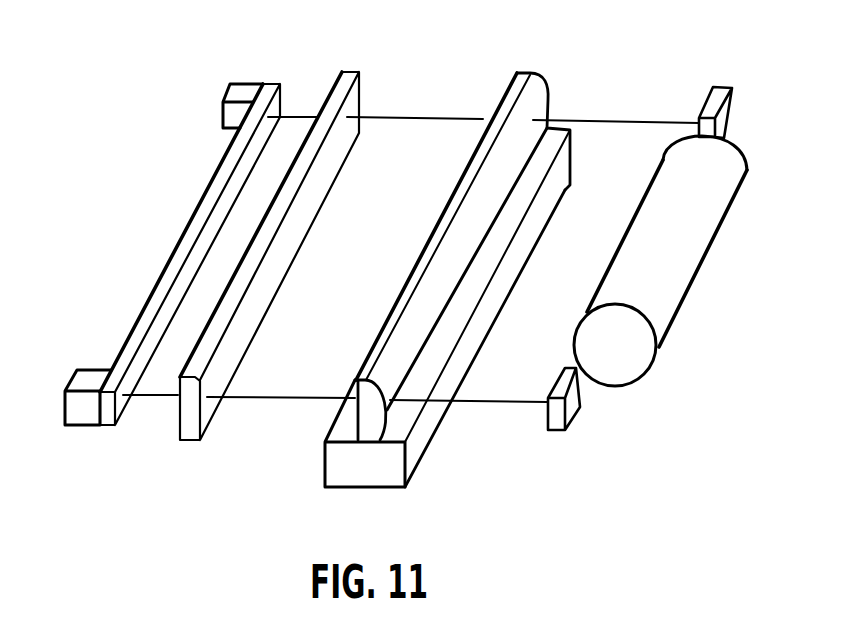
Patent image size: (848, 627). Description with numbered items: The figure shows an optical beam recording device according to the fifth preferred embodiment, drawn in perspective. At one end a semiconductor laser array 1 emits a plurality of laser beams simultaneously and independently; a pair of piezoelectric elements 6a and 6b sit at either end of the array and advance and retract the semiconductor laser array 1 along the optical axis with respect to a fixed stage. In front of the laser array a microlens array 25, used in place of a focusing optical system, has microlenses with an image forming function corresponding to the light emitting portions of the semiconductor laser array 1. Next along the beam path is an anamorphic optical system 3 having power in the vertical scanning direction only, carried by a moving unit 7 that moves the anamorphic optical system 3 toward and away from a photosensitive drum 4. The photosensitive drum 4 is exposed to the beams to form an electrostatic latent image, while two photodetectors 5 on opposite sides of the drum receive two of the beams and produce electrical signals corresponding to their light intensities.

The semiconductor laser array 1 is at (271, 84).
The anamorphic optical system 3 is at (542, 102).
The photosensitive drum 4 is at (727, 183).
The photodetectors 5 is at (716, 88).
The piezoelectric element 6a is at (92, 377).
The piezoelectric element 6b is at (243, 92).
The moving unit 7 is at (393, 466).
The microlens array 25 is at (355, 107).